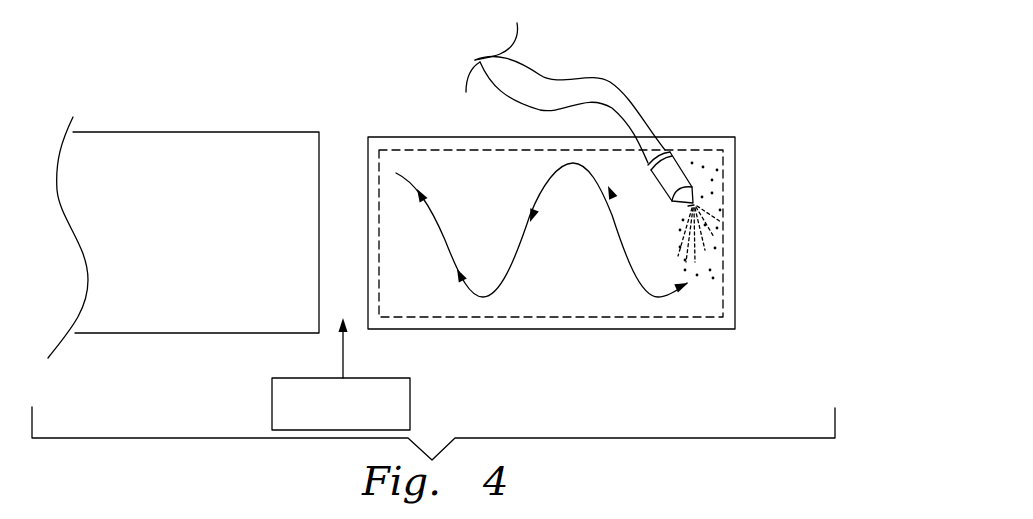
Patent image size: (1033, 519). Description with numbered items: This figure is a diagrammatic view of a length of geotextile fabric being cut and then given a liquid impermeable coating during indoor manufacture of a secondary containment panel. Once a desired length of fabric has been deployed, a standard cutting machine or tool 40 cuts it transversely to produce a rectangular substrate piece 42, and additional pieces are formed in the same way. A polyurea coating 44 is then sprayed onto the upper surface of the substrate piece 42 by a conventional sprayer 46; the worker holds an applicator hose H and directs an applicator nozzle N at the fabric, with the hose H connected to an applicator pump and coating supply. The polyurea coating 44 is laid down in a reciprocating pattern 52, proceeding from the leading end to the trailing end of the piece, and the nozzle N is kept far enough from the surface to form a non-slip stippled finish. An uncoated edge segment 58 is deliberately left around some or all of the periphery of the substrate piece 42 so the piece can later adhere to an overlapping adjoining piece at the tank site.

The cutting machine or tool 40 is at (272, 400).
The rectangular substrate piece 42 is at (736, 142).
The polyurea coating 44 is at (712, 182).
The sprayer 46 is at (668, 145).
The reciprocating pattern 52 is at (517, 257).
The uncoated edge segment 58 is at (728, 285).
The applicator hose H is at (597, 75).
The applicator nozzle N is at (673, 178).